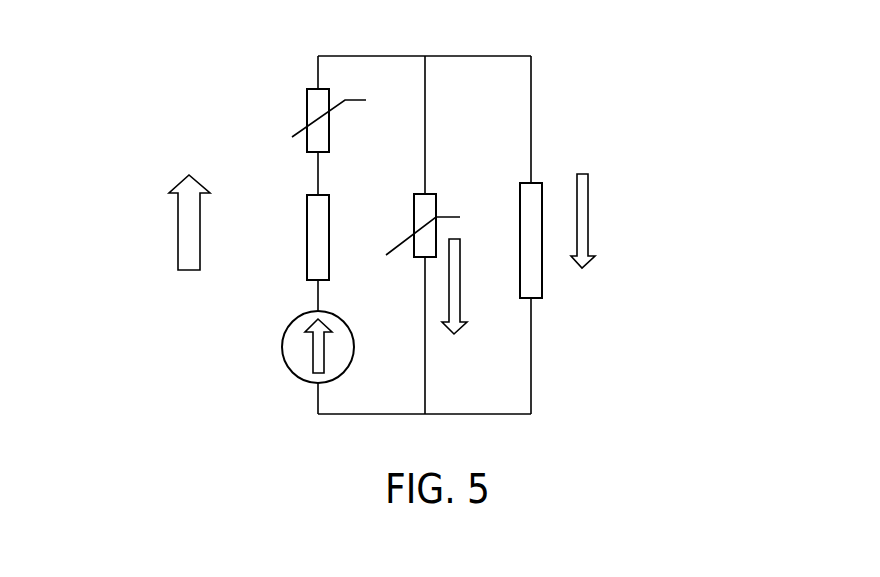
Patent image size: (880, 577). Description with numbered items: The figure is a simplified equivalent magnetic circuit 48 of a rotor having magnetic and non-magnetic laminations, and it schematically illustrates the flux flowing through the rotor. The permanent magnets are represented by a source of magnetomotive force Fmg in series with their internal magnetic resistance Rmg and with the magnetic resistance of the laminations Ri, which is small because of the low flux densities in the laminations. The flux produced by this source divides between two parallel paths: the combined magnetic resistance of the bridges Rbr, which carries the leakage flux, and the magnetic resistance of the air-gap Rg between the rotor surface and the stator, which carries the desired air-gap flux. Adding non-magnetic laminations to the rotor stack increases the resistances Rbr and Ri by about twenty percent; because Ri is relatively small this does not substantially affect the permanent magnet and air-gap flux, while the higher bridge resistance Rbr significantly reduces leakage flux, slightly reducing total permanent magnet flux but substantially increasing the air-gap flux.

The equivalent magnetic circuit 48 is at (401, 213).
The magnetic resistance of the laminations Ri is at (314, 120).
The internal magnetic resistance of the permanent magnets Rmg is at (287, 237).
The magnetomotive force of the permanent magnets Fmg is at (285, 347).
The combined magnetic resistance of the bridges Rbr is at (414, 217).
The magnetic resistance of the air-gap Rg is at (510, 239).